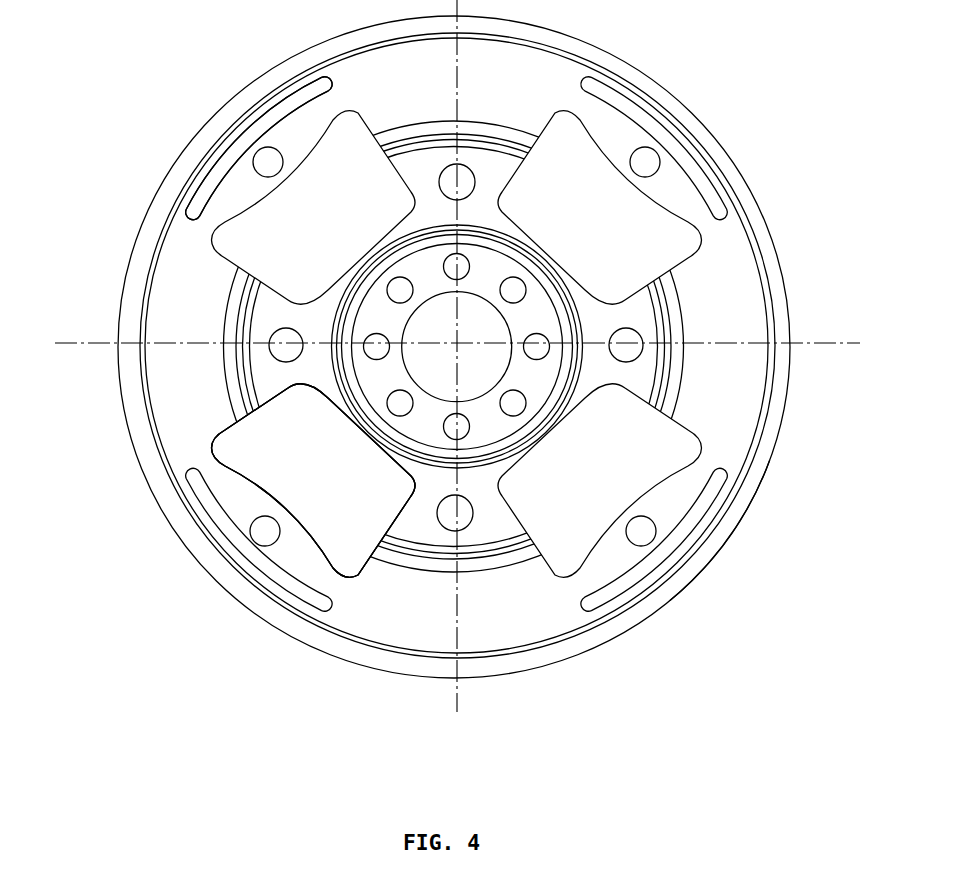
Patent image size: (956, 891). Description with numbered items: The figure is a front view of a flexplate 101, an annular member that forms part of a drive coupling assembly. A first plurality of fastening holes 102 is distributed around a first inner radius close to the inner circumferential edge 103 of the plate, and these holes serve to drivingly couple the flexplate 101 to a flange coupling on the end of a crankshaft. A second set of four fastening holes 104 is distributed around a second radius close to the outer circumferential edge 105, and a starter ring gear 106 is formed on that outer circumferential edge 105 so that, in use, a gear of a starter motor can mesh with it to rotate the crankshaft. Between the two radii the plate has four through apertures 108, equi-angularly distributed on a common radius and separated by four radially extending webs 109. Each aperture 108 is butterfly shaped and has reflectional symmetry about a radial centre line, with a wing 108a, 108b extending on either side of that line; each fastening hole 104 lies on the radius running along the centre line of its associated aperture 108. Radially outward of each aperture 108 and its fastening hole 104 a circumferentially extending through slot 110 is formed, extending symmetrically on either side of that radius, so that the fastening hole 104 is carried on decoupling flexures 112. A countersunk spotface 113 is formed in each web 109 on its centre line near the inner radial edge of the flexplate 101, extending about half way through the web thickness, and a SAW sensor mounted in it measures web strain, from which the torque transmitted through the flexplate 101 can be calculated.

The flexplate 101 is at (717, 295).
The first plurality of fastening holes 102 is at (540, 355).
The inner circumferential edge 103 is at (402, 338).
The second set of four fastening holes 104 is at (268, 164).
The outer circumferential edge 105 is at (730, 538).
The starter ring gear 106 is at (767, 237).
The through apertures 108 is at (295, 458).
The wing 108a is at (235, 458).
The wing 108b is at (345, 565).
The radially extending webs 109 is at (268, 312).
The circumferentially extending through slot 110 is at (628, 100).
The decoupling flexures 112 is at (240, 190).
The countersunk spotface 113 is at (290, 352).